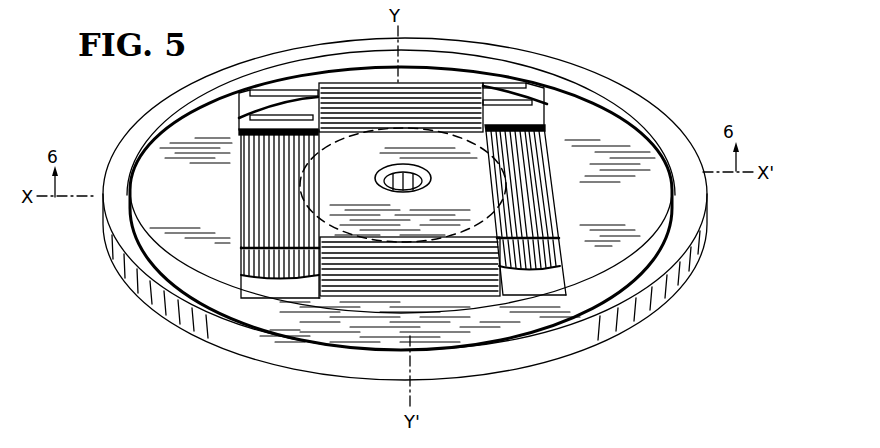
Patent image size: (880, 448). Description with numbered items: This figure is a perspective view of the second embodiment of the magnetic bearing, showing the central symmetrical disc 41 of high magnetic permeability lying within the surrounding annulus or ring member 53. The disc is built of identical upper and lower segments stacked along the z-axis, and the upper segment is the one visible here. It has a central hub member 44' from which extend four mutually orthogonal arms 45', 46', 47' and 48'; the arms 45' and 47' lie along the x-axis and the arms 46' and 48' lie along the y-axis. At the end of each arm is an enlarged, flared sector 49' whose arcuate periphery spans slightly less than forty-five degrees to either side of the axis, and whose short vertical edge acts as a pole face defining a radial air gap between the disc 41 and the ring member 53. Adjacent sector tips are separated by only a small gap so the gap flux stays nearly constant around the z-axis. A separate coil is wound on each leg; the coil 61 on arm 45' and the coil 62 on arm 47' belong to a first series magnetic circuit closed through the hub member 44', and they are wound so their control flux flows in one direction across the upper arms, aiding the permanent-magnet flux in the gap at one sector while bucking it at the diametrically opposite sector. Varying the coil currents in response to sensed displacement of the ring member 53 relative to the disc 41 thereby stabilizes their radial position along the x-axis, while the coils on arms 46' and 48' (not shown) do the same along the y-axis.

The central symmetrical disc 41 is at (608, 136).
The hub member 44' is at (425, 178).
The upper arm 45' is at (403, 185).
The upper arm 46' is at (393, 72).
The upper arm 47' is at (401, 195).
The upper arm 48' is at (427, 318).
The flared sector 49' is at (363, 155).
The ring member 53 is at (694, 243).
The coil 61 is at (247, 193).
The coil 62 is at (560, 215).